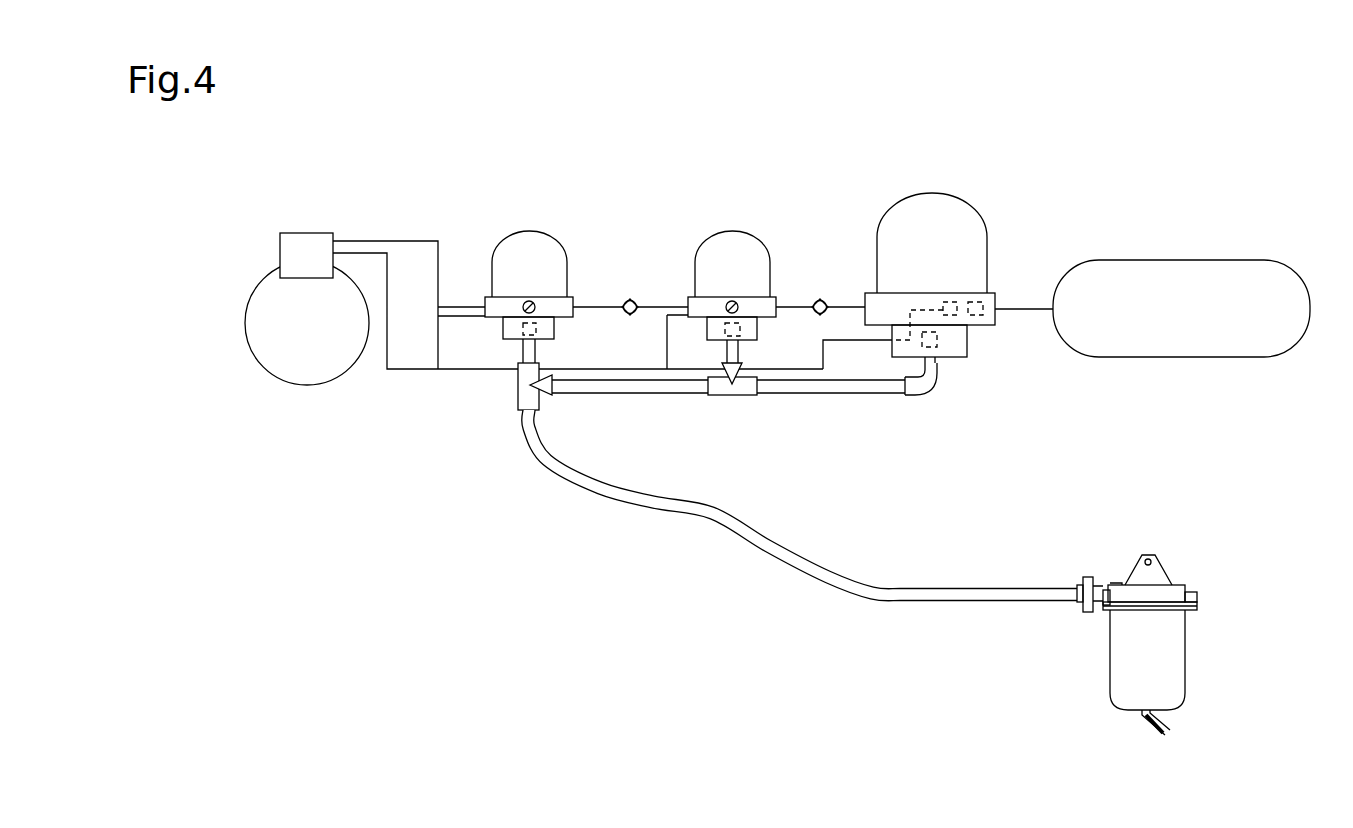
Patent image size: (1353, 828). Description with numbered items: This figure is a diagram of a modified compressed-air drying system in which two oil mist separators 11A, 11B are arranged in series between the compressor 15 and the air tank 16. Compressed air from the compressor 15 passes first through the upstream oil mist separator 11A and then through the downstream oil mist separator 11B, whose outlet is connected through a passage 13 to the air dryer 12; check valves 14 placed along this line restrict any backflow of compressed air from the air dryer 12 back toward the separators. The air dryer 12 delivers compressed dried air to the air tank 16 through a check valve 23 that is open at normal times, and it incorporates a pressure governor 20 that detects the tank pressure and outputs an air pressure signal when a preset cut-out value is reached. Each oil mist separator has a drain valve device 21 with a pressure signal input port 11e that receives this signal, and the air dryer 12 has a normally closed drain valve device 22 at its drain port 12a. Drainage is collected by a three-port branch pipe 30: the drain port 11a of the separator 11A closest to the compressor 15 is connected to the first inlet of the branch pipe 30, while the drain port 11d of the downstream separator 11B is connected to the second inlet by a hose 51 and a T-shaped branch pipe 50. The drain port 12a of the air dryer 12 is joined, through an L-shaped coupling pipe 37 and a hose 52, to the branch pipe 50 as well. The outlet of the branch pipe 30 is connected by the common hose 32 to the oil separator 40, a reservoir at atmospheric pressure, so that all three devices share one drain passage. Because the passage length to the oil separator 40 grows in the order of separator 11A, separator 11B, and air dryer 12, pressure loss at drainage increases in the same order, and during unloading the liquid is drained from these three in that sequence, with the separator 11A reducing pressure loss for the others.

The oil mist separator 11A is at (545, 233).
The oil mist separator 11B is at (750, 232).
The drain port 11a is at (542, 338).
The drain port 11d is at (745, 340).
The pressure signal input port 11e is at (529, 300).
The air dryer 12 is at (957, 195).
The drain port 12a is at (903, 360).
The passage 13 is at (677, 305).
The check valve 14 is at (630, 300).
The compressor 15 is at (245, 314).
The air tank 16 is at (1213, 259).
The pressure governor 20 is at (950, 298).
The drain valve device 21 is at (537, 330).
The drain valve device 22 is at (937, 340).
The check valve 23 is at (975, 318).
The branch pipe 30 is at (517, 398).
The common hose 32 is at (683, 517).
The L-shaped coupling pipe 37 is at (931, 397).
The oil separator 40 is at (1180, 582).
The T-shaped branch pipe 50 is at (740, 397).
The hose 51 is at (630, 394).
The hose 52 is at (832, 395).